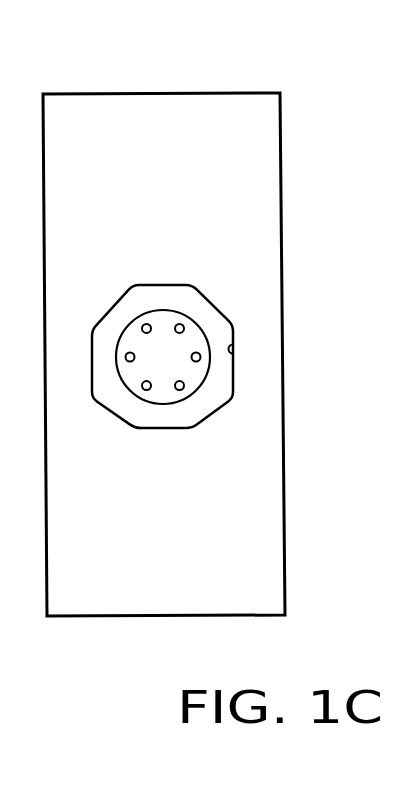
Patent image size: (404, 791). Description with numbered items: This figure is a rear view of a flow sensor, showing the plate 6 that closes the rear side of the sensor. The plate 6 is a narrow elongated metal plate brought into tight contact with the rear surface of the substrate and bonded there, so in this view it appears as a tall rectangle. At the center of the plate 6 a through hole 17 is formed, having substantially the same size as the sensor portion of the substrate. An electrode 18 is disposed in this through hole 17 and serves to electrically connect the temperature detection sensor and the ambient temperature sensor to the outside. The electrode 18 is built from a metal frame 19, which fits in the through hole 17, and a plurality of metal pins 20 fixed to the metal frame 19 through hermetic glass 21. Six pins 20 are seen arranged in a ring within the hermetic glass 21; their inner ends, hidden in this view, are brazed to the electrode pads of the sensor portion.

The plate 6 is at (88, 94).
The metal frame 19 is at (172, 292).
The through hole 17 is at (235, 354).
The hermetic glass 21 is at (197, 379).
The electrode 18 is at (208, 406).
The metal pins 20 is at (185, 323).